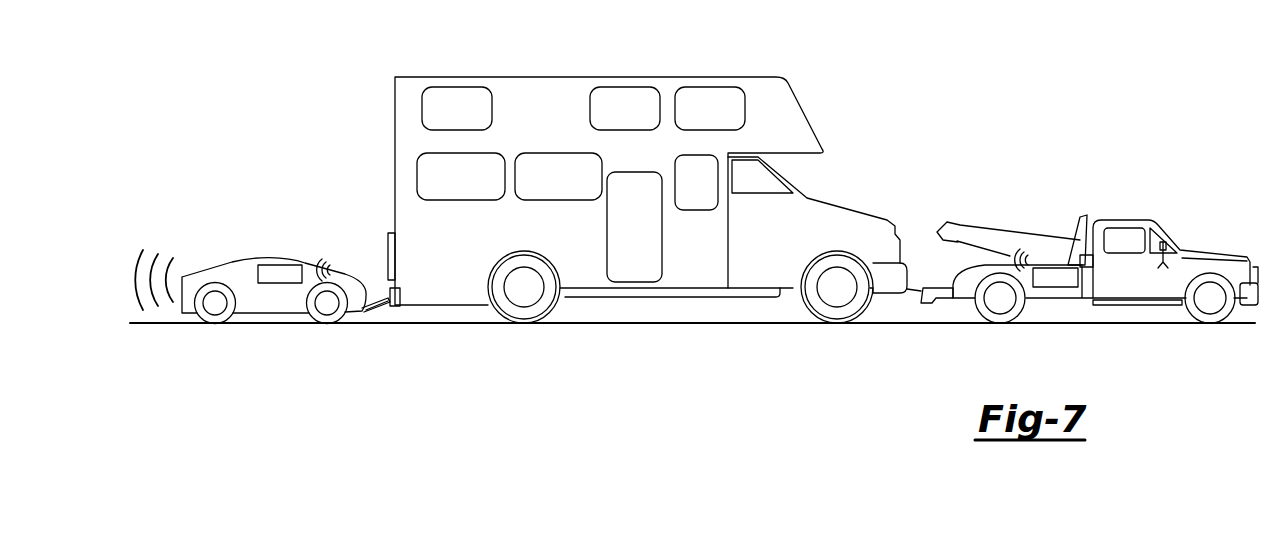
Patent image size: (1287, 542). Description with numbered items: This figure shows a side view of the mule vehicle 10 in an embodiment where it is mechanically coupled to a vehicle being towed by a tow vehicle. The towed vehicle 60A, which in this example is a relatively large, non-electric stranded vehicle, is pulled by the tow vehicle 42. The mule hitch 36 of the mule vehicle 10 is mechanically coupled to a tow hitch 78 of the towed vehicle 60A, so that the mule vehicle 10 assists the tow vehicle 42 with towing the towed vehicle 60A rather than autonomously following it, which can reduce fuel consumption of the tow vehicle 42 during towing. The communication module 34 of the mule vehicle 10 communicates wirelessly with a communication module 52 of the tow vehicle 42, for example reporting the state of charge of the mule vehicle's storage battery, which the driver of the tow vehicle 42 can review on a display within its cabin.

The mule vehicle 10 is at (234, 250).
The communication module 34 is at (283, 263).
The mule hitch 36 is at (365, 310).
The tow hitch 78 is at (380, 316).
The towed vehicle 60A is at (683, 58).
The tow vehicle 42 is at (1180, 215).
The communication module 52 is at (1058, 267).